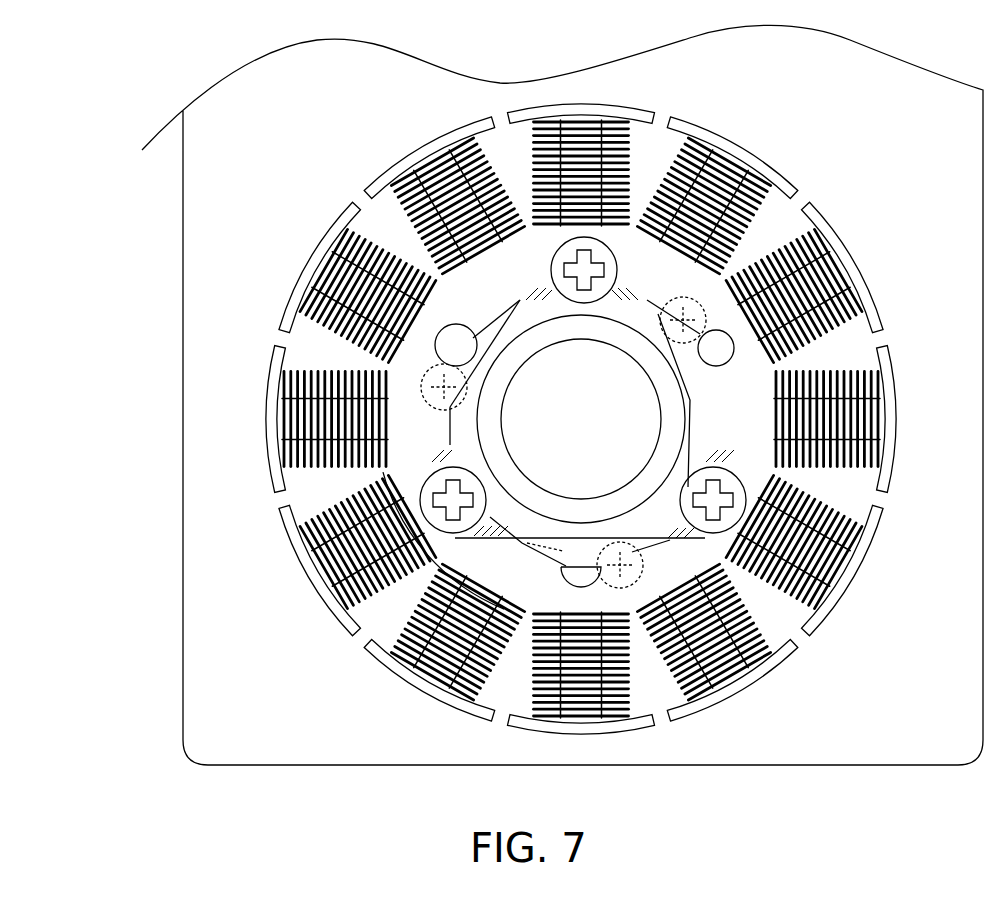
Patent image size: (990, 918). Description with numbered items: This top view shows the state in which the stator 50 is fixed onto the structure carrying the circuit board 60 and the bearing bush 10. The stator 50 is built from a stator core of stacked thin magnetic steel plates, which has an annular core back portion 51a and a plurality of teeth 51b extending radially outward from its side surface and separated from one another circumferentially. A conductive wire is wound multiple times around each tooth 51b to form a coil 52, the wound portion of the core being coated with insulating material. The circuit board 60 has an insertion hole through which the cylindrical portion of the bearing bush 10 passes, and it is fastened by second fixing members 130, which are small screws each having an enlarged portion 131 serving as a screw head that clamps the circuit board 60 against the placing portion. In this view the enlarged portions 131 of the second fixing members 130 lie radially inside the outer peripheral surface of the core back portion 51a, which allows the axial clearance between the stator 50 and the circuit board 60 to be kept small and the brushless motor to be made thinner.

The bearing bush 10 is at (636, 365).
The stator 50 is at (607, 409).
The core back portion 51a is at (713, 292).
The teeth 51b is at (810, 293).
The coil 52 is at (823, 333).
The circuit board 60 is at (180, 486).
The second fixing member 130 is at (428, 383).
The enlarged portion 131 is at (463, 410).